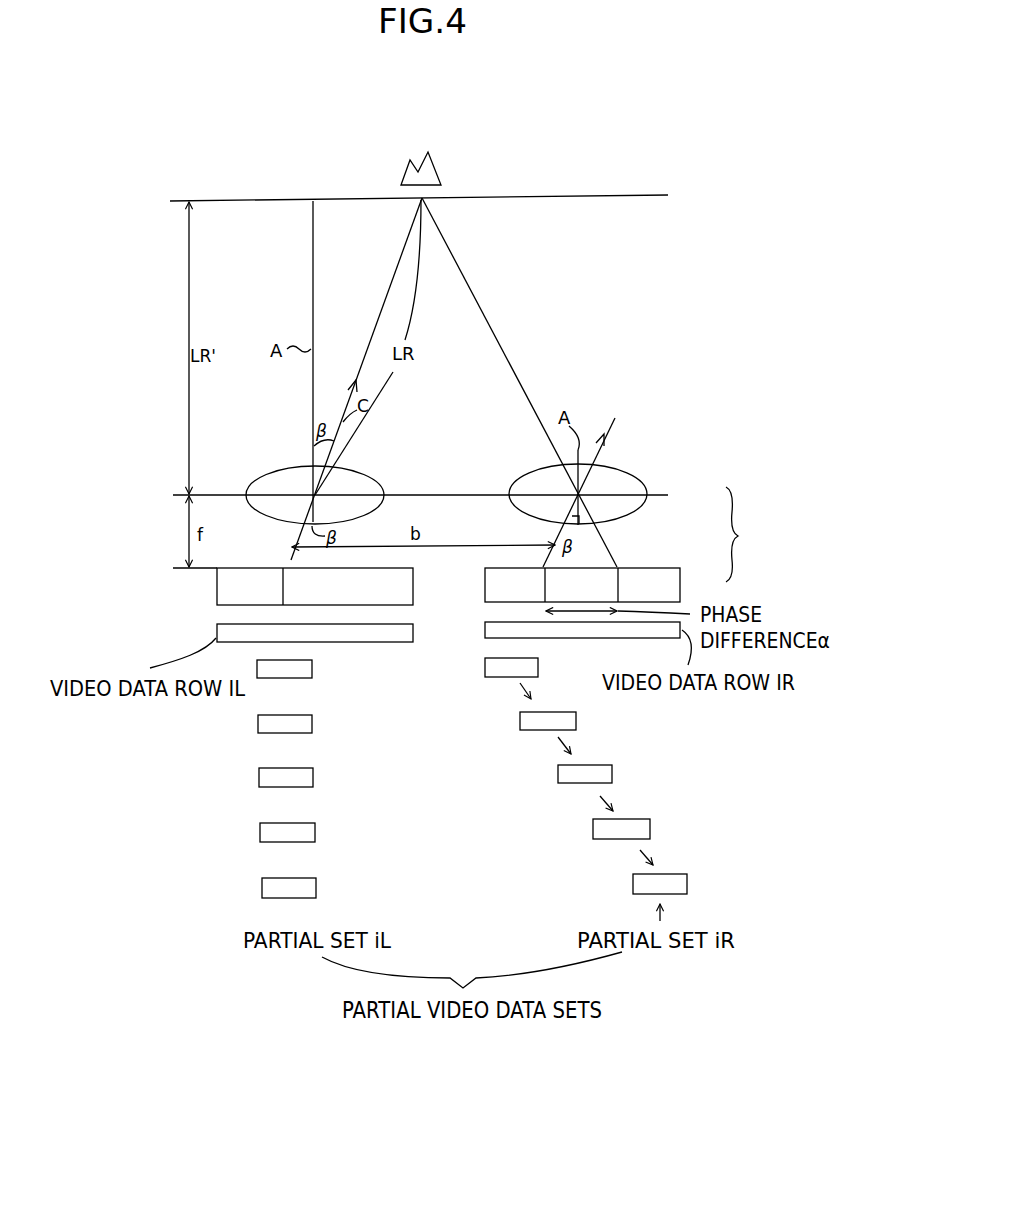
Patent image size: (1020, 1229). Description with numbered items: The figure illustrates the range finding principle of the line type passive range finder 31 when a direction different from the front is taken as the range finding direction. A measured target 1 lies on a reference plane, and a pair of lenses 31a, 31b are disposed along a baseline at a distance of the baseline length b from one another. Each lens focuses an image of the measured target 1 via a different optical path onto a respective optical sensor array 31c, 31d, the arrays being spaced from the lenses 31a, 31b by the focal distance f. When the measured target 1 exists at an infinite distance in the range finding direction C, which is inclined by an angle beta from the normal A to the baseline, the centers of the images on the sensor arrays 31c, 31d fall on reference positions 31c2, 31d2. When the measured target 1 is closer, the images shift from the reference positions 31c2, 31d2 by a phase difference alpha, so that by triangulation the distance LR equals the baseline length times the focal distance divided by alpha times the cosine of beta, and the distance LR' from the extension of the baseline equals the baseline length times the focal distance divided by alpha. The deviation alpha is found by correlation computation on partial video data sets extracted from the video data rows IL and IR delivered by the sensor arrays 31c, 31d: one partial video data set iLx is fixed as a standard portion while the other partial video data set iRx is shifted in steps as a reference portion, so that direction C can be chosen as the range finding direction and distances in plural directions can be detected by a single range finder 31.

The measured target 1 is at (438, 168).
The line type passive range finder 31 is at (745, 534).
The lens 31a is at (258, 477).
The lens 31b is at (600, 461).
The optical sensor array 31c is at (217, 592).
The reference position 31c2 is at (284, 568).
The optical sensor array 31d is at (660, 568).
The reference position 31d2 is at (540, 568).
The partial video data set iLx is at (258, 833).
The partial video data set iRx is at (651, 829).